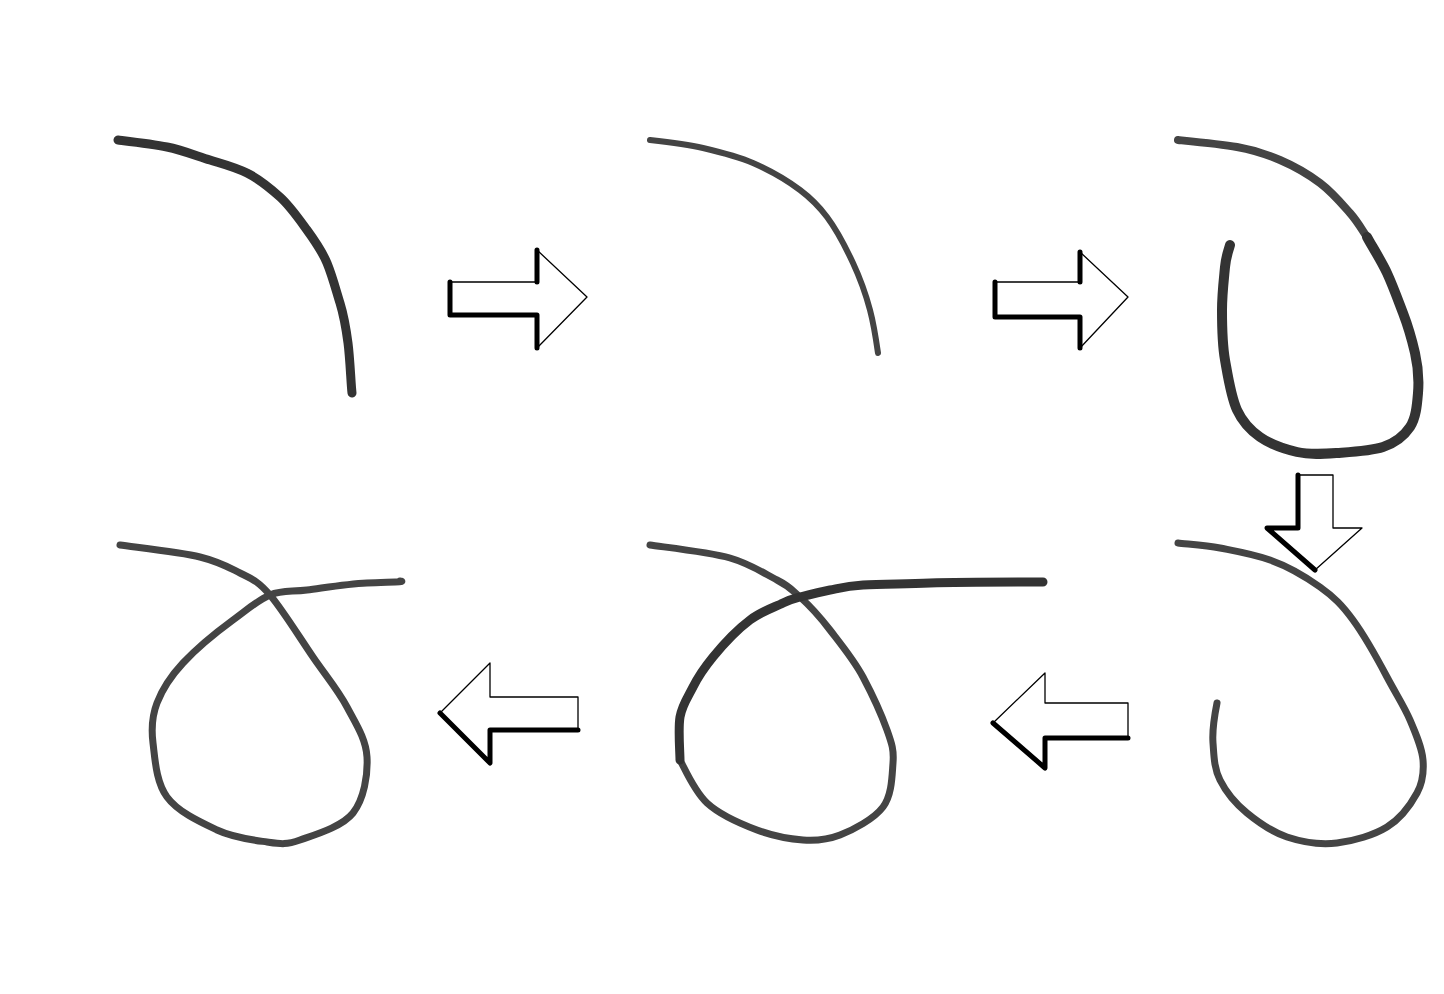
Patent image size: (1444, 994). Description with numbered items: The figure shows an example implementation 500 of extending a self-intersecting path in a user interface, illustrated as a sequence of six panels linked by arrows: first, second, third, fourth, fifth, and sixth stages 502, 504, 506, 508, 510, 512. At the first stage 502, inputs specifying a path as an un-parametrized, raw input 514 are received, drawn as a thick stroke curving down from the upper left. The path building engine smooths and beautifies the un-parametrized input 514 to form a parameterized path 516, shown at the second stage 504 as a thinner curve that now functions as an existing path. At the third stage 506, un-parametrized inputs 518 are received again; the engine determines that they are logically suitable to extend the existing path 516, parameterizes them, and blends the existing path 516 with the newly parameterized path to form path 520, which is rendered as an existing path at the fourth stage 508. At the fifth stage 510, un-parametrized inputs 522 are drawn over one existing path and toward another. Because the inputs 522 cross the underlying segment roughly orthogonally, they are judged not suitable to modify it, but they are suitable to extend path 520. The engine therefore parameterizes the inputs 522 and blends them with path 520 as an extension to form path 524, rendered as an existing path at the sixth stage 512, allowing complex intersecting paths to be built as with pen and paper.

The example implementation 500 is at (236, 89).
The first stage 502 is at (200, 104).
The second stage 504 is at (714, 103).
The third stage 506 is at (1262, 94).
The fourth stage 508 is at (1206, 499).
The fifth stage 510 is at (717, 509).
The sixth stage 512 is at (183, 506).
The un-parametrized input 514 is at (247, 170).
The path 516 is at (1026, 264).
The un-parametrized inputs 518 is at (1254, 434).
The path 520 is at (1032, 659).
The un-parametrized inputs 522 is at (929, 579).
The path 524 is at (303, 838).